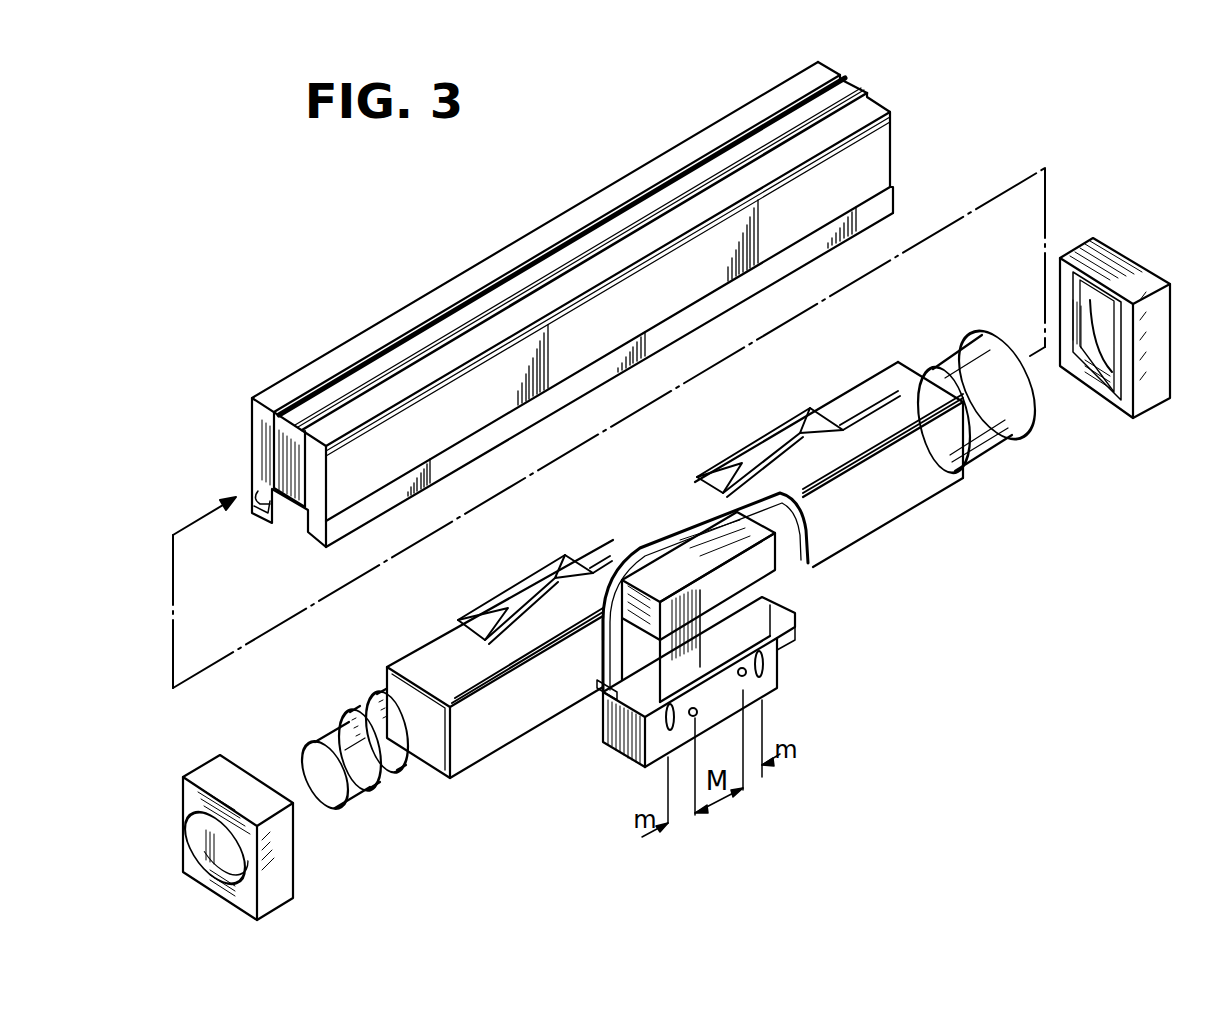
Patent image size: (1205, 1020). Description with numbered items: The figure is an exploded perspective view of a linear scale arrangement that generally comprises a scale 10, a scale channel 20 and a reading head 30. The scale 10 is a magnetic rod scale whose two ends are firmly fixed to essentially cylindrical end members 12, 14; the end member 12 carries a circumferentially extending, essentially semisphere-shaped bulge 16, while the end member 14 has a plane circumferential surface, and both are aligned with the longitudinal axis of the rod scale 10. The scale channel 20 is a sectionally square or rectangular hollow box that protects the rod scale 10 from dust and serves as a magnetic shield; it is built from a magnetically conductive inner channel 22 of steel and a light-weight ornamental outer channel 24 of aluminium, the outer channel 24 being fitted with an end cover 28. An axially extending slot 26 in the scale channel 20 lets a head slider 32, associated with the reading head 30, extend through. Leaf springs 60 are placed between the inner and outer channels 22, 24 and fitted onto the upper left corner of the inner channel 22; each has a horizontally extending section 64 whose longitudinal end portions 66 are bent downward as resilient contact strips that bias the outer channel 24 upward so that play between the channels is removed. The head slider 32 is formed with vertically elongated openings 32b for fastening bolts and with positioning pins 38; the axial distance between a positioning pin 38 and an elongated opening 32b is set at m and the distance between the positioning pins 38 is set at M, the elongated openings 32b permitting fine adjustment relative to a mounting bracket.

The scale 10 is at (786, 548).
The end member 12 is at (360, 785).
The end member 14 is at (1003, 410).
The bulge 16 is at (400, 760).
The scale channel 20 is at (572, 304).
The inner channel 22 is at (510, 725).
The outer channel 24 is at (696, 148).
The slot 26 is at (283, 507).
The end cover 28 is at (278, 890).
The reading head 30 is at (742, 590).
The head slider 32 is at (767, 640).
The vertically elongated opening 32b is at (665, 732).
The positioning pin 38 is at (691, 716).
The leaf spring 60 is at (513, 582).
The horizontally extending section 64 is at (540, 577).
The longitudinal end portion 66 is at (460, 622).